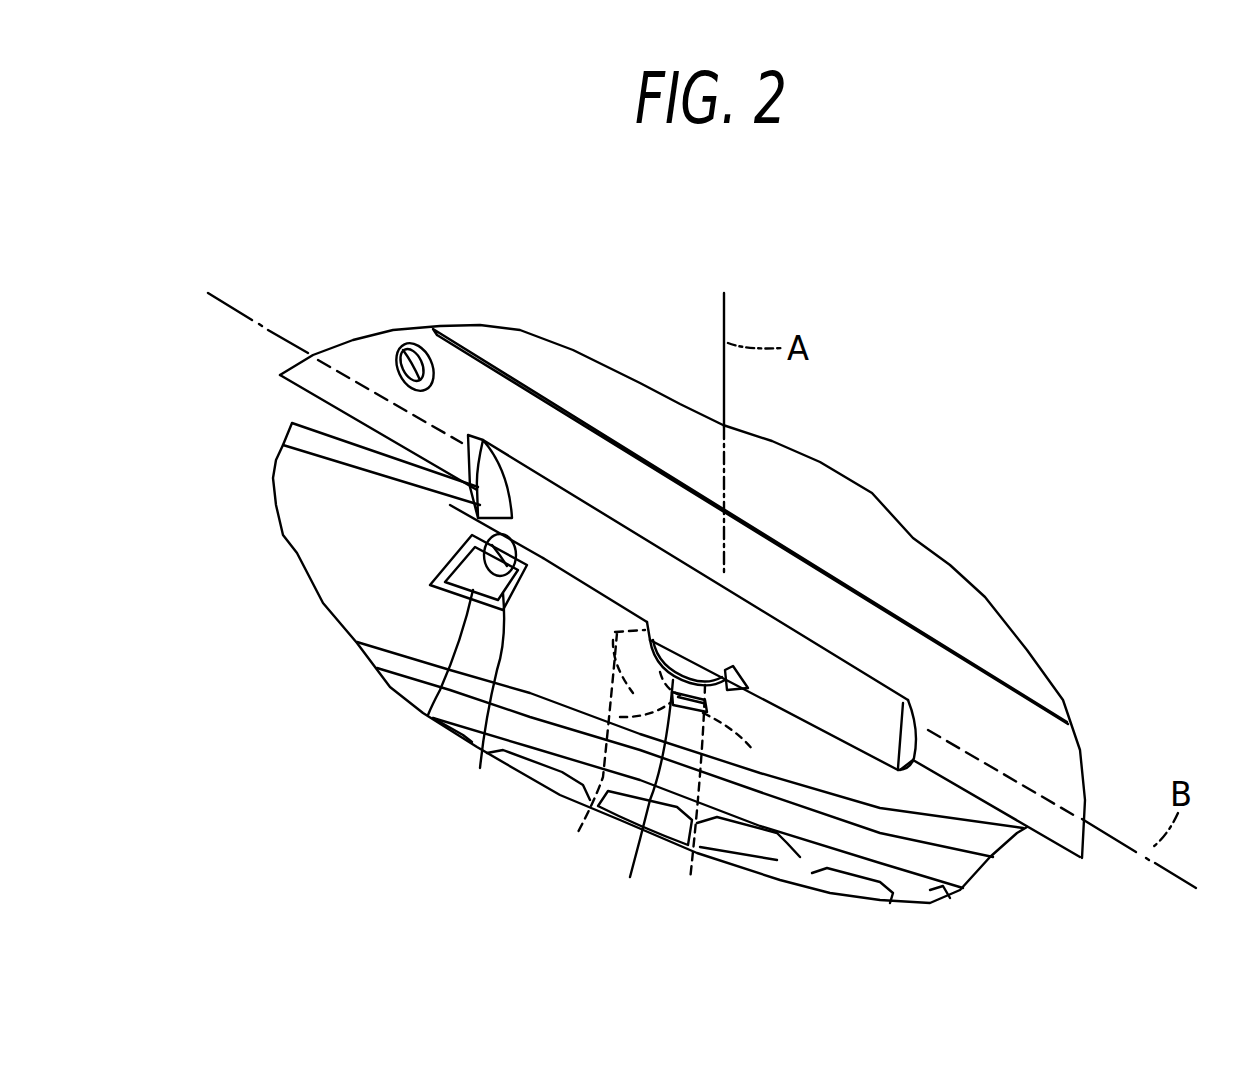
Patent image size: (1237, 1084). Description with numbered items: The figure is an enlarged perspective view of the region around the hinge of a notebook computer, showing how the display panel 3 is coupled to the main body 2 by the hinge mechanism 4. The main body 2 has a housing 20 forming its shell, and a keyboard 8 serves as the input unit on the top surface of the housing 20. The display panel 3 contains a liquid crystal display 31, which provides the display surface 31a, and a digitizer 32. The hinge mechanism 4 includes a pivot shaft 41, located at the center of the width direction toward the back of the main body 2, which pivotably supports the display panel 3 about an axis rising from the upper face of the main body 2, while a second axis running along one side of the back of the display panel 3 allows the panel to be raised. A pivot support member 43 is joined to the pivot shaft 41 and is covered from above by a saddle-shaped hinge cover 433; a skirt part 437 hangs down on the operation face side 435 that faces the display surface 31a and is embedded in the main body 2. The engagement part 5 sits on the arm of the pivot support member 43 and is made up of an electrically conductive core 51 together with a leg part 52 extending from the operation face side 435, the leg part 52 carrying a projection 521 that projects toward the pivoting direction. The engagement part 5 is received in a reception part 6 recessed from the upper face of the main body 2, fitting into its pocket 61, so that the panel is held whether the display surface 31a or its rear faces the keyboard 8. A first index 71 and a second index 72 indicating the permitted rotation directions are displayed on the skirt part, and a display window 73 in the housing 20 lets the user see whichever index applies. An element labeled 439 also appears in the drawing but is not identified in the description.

The main body 2 is at (607, 695).
The display panel 3 is at (682, 558).
The hinge mechanism 4 is at (699, 607).
The engagement part 5 is at (458, 529).
The reception part 6 is at (443, 563).
The keyboard 8 is at (837, 880).
The housing 20 is at (283, 510).
The liquid crystal display 31 is at (948, 600).
The display surface 31a is at (912, 555).
The digitizer 32 is at (823, 463).
The pivot shaft 41 is at (745, 683).
The pivot support member 43 is at (770, 657).
The core 51 is at (517, 580).
The leg part 52 is at (446, 538).
The pocket 61 is at (483, 703).
The first index 71 is at (600, 752).
The second index 72 is at (692, 802).
The display window 73 is at (640, 800).
The hinge cover 433 is at (642, 567).
The operation face side 435 is at (630, 577).
The skirt part 437 is at (740, 738).
The hole 439 is at (486, 560).
The projection 521 is at (430, 713).